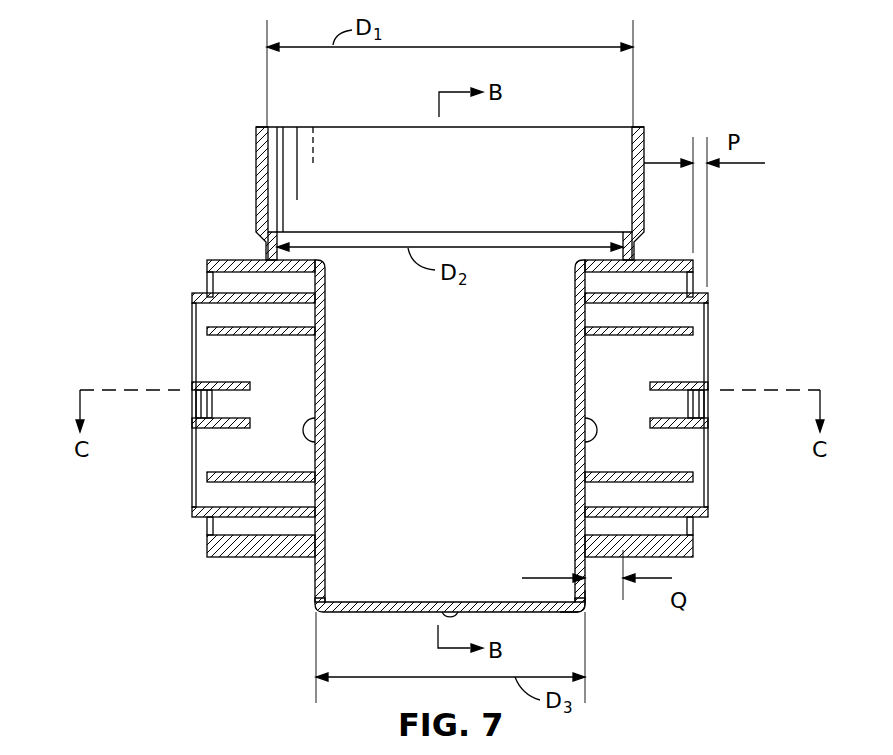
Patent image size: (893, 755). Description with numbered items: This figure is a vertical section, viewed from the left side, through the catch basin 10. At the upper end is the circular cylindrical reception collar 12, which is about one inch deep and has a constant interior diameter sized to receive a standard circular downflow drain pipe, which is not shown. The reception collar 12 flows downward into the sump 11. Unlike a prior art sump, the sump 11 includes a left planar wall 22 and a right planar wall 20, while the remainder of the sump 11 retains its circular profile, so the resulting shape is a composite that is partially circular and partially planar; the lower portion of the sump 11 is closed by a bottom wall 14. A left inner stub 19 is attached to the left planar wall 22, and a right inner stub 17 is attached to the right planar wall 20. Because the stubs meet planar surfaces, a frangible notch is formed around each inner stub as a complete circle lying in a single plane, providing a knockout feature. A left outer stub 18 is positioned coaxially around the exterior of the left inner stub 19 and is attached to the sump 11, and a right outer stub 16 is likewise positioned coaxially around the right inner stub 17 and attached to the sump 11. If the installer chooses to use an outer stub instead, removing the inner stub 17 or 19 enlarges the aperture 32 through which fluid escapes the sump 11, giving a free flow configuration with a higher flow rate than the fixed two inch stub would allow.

The catch basin 10 is at (653, 97).
The sump 11 is at (365, 562).
The reception collar 12 is at (644, 198).
The bottom wall 14 is at (585, 608).
The right outer stub 16 is at (693, 262).
The right inner stub 17 is at (706, 297).
The left outer stub 18 is at (215, 262).
The left inner stub 19 is at (195, 297).
The right planar wall 20 is at (577, 312).
The left planar wall 22 is at (327, 339).
The aperture 32 is at (327, 448).